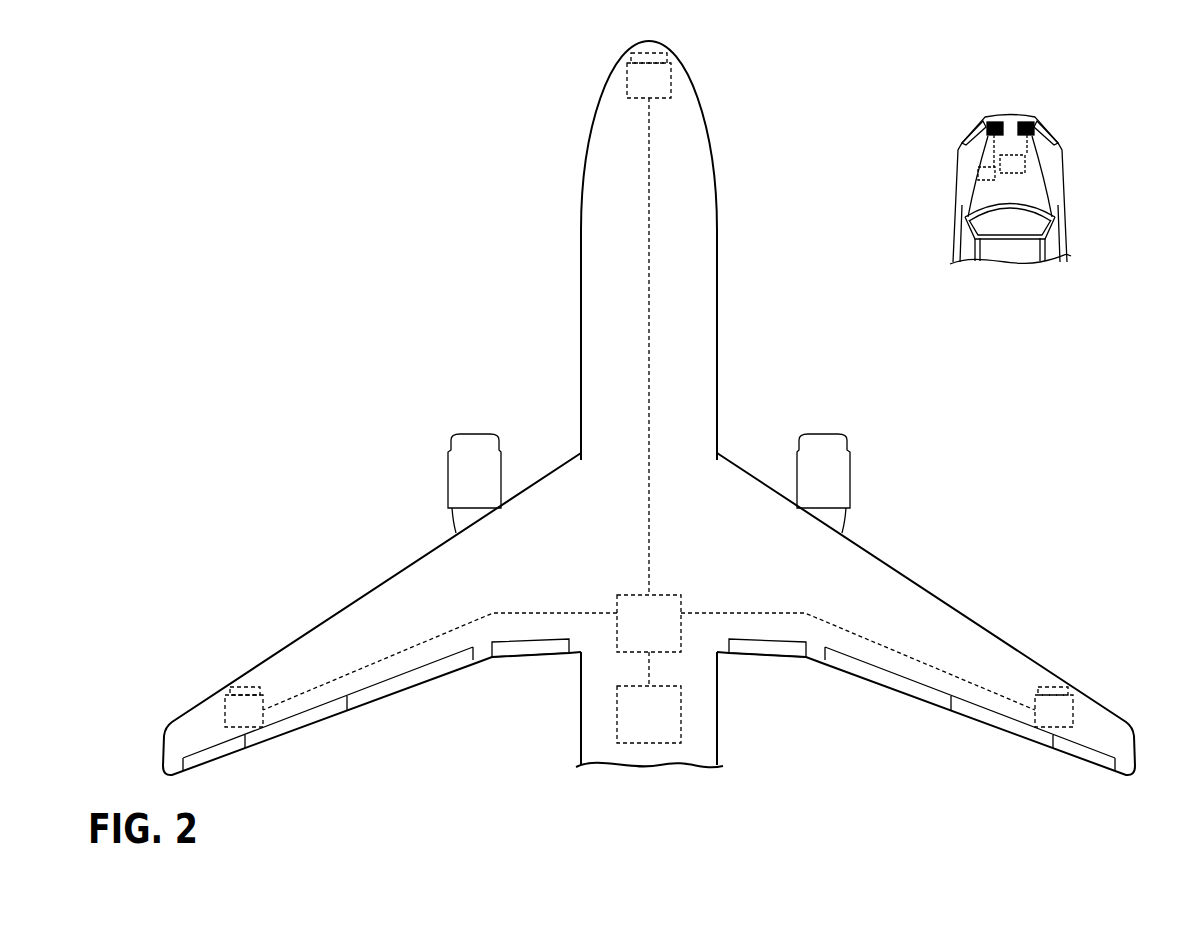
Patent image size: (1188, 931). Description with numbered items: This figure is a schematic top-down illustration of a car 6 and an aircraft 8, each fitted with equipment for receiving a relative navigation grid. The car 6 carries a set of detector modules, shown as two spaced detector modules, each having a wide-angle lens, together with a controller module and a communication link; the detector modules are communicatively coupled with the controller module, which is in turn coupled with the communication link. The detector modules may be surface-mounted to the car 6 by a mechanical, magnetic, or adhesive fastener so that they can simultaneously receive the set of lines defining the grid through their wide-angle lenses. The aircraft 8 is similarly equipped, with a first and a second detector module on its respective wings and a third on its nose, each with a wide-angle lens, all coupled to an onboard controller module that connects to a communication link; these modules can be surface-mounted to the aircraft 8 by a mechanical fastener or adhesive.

The car 6 is at (1005, 163).
The aircraft 8 is at (566, 210).